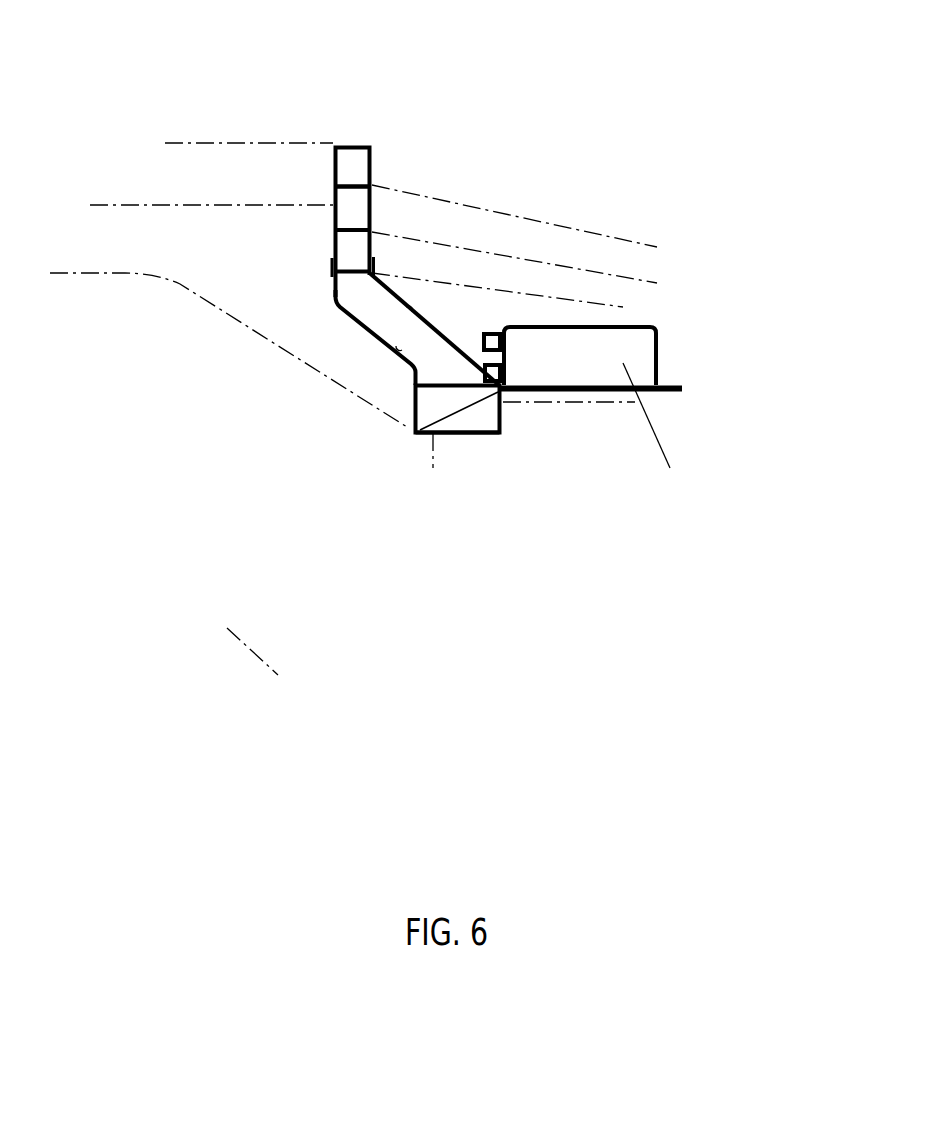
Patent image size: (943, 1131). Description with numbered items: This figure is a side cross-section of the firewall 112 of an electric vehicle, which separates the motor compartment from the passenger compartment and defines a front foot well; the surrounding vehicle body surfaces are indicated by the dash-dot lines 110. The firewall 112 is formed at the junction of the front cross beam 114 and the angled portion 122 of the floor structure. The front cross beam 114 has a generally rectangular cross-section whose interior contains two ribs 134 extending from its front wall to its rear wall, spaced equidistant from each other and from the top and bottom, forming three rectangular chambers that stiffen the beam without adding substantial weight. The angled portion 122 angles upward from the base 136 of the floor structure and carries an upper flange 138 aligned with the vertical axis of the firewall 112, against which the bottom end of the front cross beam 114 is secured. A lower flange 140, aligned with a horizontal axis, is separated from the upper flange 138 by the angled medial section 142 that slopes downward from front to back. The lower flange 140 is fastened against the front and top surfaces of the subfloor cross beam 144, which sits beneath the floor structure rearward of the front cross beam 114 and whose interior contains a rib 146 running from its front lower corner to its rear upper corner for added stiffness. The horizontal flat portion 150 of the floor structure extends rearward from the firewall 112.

The vehicle body panel 110 is at (582, 230).
The firewall 112 is at (292, 242).
The front cross beam 114 is at (347, 143).
The angled portion 122 is at (373, 328).
The ribs 134 is at (353, 187).
The base 136 is at (530, 387).
The upper flange 138 is at (330, 267).
The lower flange 140 is at (412, 393).
The angled medial section 142 is at (403, 330).
The subfloor cross beam 144 is at (478, 437).
The rib 146 is at (445, 422).
The flat portion 150 is at (668, 385).